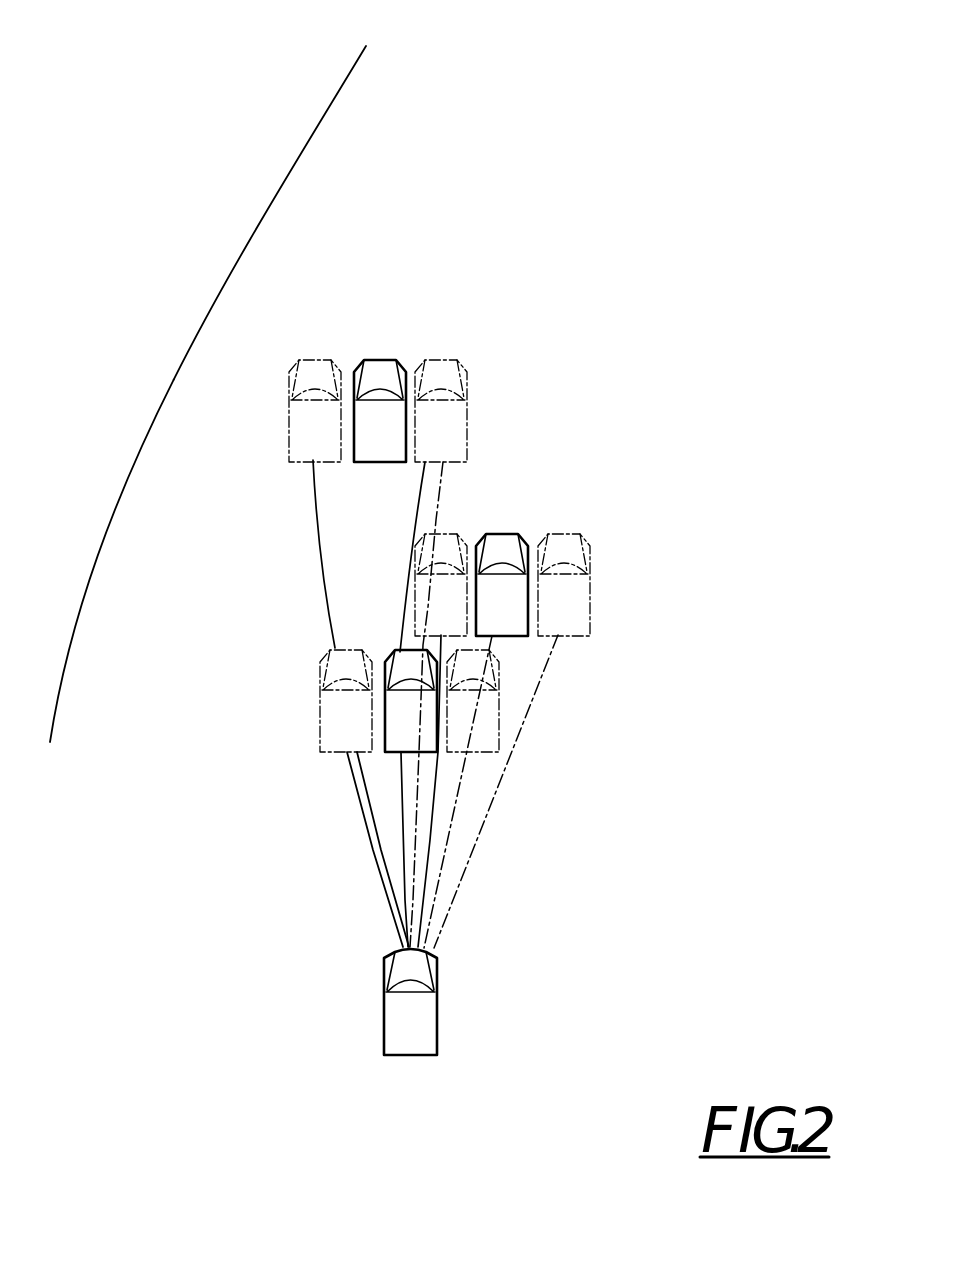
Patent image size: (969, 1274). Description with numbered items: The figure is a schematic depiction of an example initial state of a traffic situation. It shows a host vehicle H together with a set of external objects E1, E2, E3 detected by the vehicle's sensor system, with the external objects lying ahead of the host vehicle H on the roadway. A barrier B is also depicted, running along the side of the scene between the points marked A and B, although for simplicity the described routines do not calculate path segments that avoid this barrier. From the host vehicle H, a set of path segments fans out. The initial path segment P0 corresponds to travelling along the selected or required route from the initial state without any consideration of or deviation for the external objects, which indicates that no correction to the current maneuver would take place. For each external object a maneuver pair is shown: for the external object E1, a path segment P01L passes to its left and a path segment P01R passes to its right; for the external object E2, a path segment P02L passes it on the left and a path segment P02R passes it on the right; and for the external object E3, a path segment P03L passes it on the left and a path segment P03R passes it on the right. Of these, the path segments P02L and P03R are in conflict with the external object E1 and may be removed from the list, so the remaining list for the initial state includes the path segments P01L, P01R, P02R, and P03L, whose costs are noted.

The road boundary curve end point A is at (102, 583).
The barrier B is at (282, 195).
The host vehicle H is at (410, 1002).
The external object E1 is at (411, 701).
The external object E2 is at (502, 585).
The external object E3 is at (380, 411).
The initial path segment P0 is at (400, 863).
The path segment P01L is at (370, 835).
The path segment P01R is at (443, 860).
The path segment P02L is at (434, 791).
The path segment P02R is at (547, 665).
The path segment P03L is at (357, 798).
The path segment P03R is at (445, 497).